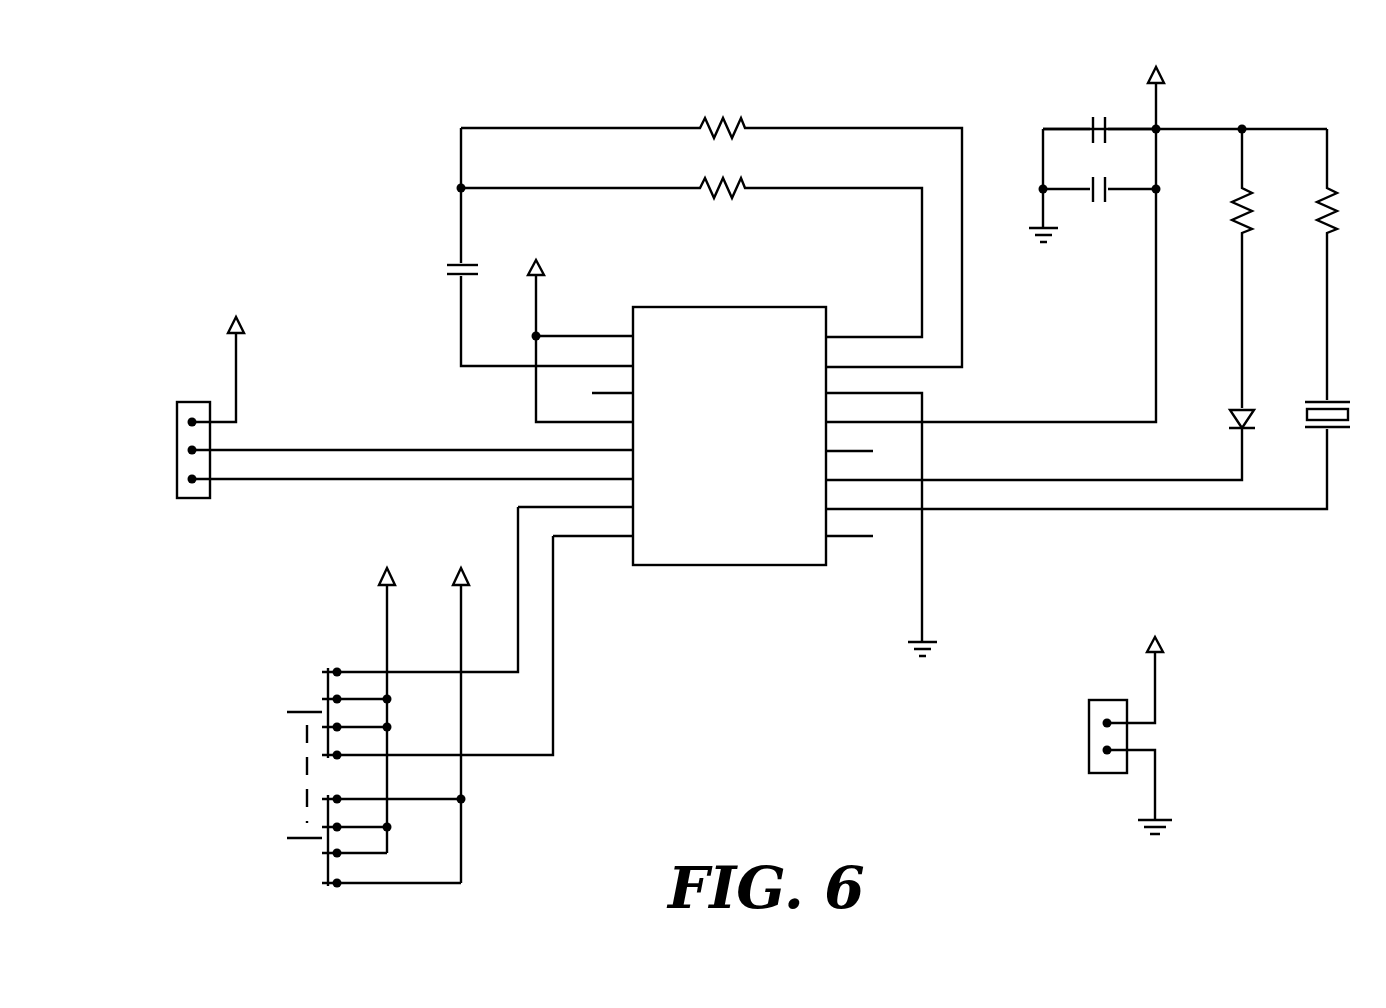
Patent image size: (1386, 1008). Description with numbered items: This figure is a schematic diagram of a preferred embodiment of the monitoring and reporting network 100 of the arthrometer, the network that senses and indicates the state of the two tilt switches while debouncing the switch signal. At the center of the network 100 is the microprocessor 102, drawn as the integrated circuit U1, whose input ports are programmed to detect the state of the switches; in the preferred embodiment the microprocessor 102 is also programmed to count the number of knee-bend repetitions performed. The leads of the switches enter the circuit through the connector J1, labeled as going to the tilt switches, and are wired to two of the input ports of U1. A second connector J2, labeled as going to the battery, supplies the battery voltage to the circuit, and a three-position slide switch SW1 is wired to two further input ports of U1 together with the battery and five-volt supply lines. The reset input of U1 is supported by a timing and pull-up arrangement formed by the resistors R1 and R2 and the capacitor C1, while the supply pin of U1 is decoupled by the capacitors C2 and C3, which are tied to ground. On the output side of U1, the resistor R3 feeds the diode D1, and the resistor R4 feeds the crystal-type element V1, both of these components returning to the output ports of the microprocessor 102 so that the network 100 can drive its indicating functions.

The network 100 is at (720, 711).
The microprocessor 102 is at (729, 447).
The microcontroller U1 is at (729, 424).
The resistor R1 is at (711, 230).
The resistor R2 is at (690, 245).
The resistor R3 is at (1230, 268).
The resistor R4 is at (1315, 264).
The capacitor C1 is at (531, 247).
The capacitor C2 is at (1099, 139).
The capacitor C3 is at (1092, 197).
The diode D1 is at (1040, 443).
The crystal oscillator V1 is at (1104, 448).
The connector to tilt switches J1 is at (356, 395).
The connector to battery J2 is at (1079, 723).
The 3 position slide switch SW1 is at (390, 697).